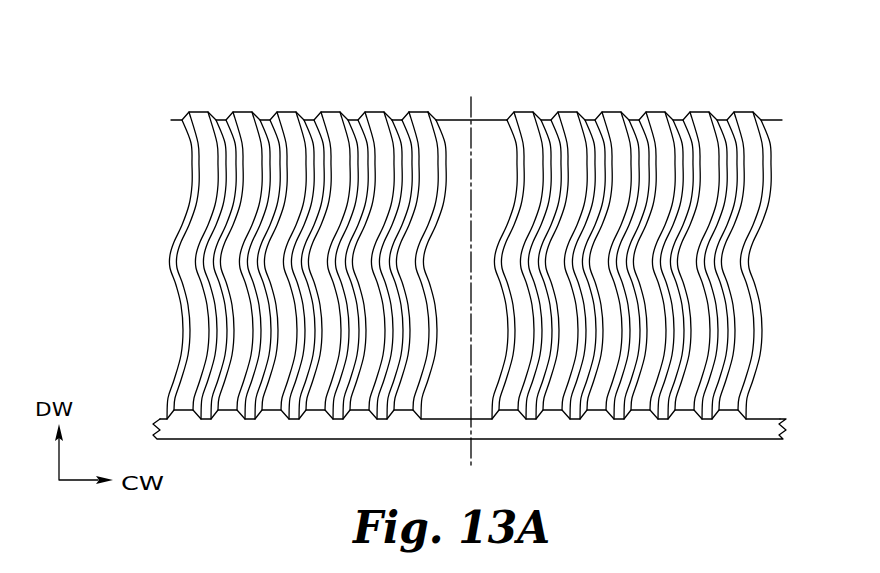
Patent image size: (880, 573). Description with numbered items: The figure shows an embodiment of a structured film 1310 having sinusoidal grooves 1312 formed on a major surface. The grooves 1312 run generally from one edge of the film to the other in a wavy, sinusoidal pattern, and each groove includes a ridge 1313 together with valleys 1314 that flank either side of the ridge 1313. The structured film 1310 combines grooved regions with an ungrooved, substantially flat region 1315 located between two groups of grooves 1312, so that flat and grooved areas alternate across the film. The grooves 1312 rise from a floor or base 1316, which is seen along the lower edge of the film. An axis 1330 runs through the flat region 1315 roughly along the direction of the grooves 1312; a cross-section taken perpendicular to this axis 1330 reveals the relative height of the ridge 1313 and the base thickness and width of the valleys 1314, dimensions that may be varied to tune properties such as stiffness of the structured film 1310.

The structured film 1310 is at (422, 212).
The grooves 1312 is at (433, 212).
The ridge 1313 is at (419, 112).
The valleys 1314 is at (394, 116).
The substantially flat regions 1315 is at (489, 133).
The floor or base 1316 is at (303, 430).
The axis 1330 is at (473, 461).